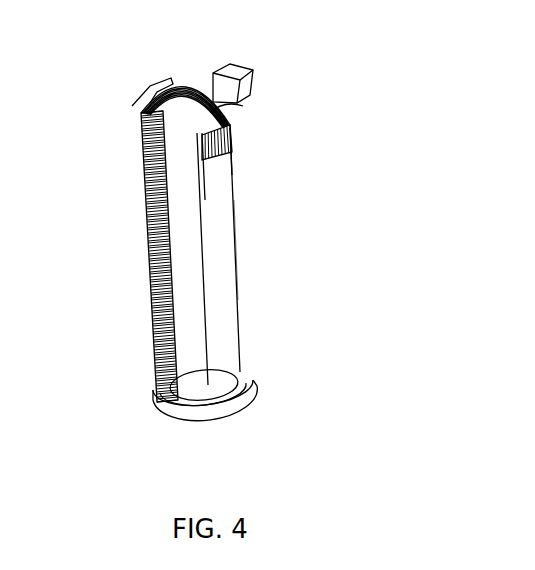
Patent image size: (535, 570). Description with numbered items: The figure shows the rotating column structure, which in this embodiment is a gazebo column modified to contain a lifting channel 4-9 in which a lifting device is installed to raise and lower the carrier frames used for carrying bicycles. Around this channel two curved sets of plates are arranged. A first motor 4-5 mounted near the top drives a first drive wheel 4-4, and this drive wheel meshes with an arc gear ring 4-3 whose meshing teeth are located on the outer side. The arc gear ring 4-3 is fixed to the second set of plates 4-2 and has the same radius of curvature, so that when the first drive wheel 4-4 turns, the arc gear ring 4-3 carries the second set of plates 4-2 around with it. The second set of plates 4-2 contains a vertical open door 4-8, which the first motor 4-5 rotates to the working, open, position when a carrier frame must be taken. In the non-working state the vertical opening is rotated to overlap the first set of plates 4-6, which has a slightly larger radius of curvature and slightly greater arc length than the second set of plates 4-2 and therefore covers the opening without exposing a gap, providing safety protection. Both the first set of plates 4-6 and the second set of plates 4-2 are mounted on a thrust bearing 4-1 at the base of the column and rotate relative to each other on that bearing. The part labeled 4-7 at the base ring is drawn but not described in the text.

The thrust bearing 4-1 is at (286, 349).
The second set of plates 4-2 is at (327, 233).
The arc gear ring 4-3 is at (309, 129).
The first drive wheel 4-4 is at (311, 84).
The first motor 4-5 is at (316, 58).
The first set of plates 4-6 is at (101, 112).
The base ring 4-7 is at (138, 387).
The vertical open door 4-8 is at (183, 283).
The lifting channel 4-9 is at (178, 212).